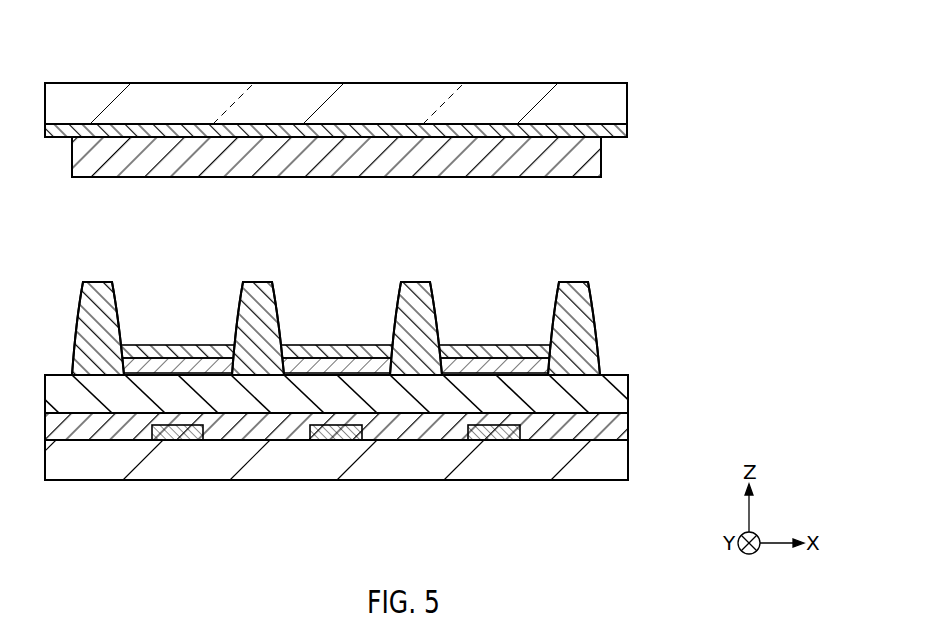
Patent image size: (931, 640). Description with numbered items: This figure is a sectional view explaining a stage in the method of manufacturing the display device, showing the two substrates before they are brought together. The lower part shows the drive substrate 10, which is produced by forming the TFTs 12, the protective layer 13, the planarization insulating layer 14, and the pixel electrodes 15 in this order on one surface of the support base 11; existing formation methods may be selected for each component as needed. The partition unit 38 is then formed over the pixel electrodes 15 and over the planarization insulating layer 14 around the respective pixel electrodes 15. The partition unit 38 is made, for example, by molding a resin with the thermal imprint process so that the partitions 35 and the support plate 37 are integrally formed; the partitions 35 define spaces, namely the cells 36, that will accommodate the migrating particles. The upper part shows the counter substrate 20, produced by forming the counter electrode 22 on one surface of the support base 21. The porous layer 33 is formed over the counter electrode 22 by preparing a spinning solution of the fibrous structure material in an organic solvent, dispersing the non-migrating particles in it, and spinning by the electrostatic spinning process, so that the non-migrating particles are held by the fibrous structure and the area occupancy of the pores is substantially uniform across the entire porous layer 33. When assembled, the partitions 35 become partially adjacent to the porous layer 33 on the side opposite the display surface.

The drive substrate 10 is at (351, 378).
The support base 11 is at (73, 470).
The TFTs 12 is at (196, 424).
The protective layer 13 is at (150, 428).
The planarization insulating layer 14 is at (270, 397).
The pixel electrodes 15 is at (513, 364).
The counter substrate 20 is at (366, 88).
The support base 21 is at (97, 93).
The counter electrode 22 is at (175, 130).
The porous layer 33 is at (485, 150).
The partitions 35 is at (488, 228).
The cells 36 is at (322, 364).
The support plate 37 is at (466, 345).
The partition unit 38 is at (336, 286).